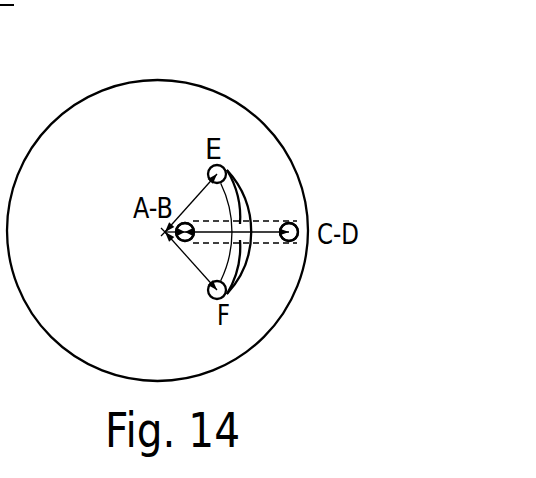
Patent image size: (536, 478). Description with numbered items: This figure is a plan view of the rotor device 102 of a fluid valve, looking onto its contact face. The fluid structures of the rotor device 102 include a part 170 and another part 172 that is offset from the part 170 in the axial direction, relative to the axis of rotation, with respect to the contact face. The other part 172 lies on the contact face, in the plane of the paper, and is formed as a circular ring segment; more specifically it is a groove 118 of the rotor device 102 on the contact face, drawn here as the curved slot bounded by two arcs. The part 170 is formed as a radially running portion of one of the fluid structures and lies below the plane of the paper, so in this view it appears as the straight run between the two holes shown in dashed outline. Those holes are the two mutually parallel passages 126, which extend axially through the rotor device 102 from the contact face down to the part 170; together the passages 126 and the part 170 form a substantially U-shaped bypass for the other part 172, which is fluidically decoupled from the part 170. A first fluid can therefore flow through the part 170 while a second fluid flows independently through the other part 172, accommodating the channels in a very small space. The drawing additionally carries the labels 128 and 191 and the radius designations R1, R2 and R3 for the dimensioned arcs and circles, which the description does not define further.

The rotor device 102 is at (118, 87).
The passages 126 is at (297, 221).
The arcuate slot 128 is at (248, 210).
The groove 118 is at (229, 273).
The part of the fluid structures 170 is at (250, 239).
The other part of the fluid structures 172 is at (243, 250).
The pins 191 is at (298, 239).
The radius R1 is at (161, 232).
The radius R2 is at (181, 229).
The radius R3 is at (290, 219).